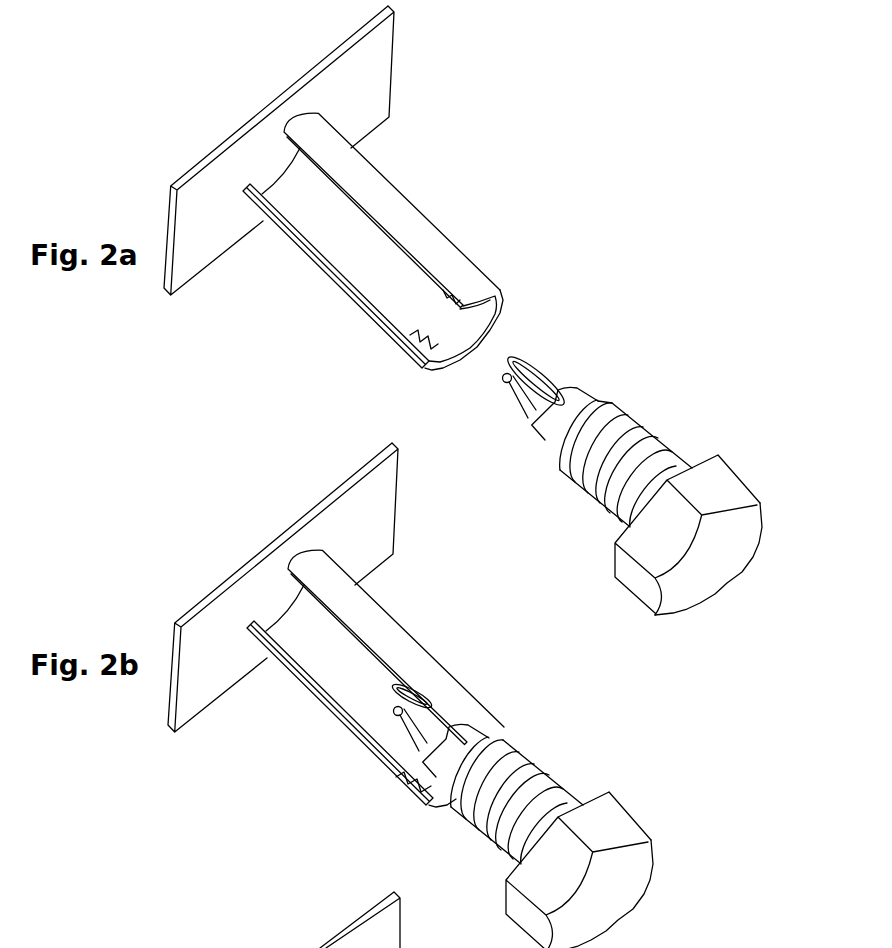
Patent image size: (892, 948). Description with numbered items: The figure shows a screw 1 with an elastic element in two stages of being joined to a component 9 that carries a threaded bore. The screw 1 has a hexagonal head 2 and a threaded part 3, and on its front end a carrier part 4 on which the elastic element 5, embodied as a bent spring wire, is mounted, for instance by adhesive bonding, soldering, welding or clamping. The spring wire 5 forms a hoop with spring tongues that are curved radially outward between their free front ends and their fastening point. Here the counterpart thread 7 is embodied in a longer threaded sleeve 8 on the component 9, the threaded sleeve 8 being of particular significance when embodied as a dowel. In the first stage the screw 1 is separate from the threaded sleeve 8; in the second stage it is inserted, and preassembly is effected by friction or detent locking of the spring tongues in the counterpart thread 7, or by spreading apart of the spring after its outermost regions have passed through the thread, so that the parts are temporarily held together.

The screw 1 is at (552, 541).
The hexagonal head 2 is at (723, 492).
The threaded part 3 is at (627, 423).
The carrier part 4 is at (545, 445).
The elastic element 5 is at (540, 370).
The counterpart thread 7 is at (417, 350).
The threaded sleeve 8 is at (418, 228).
The component 9 is at (380, 98).